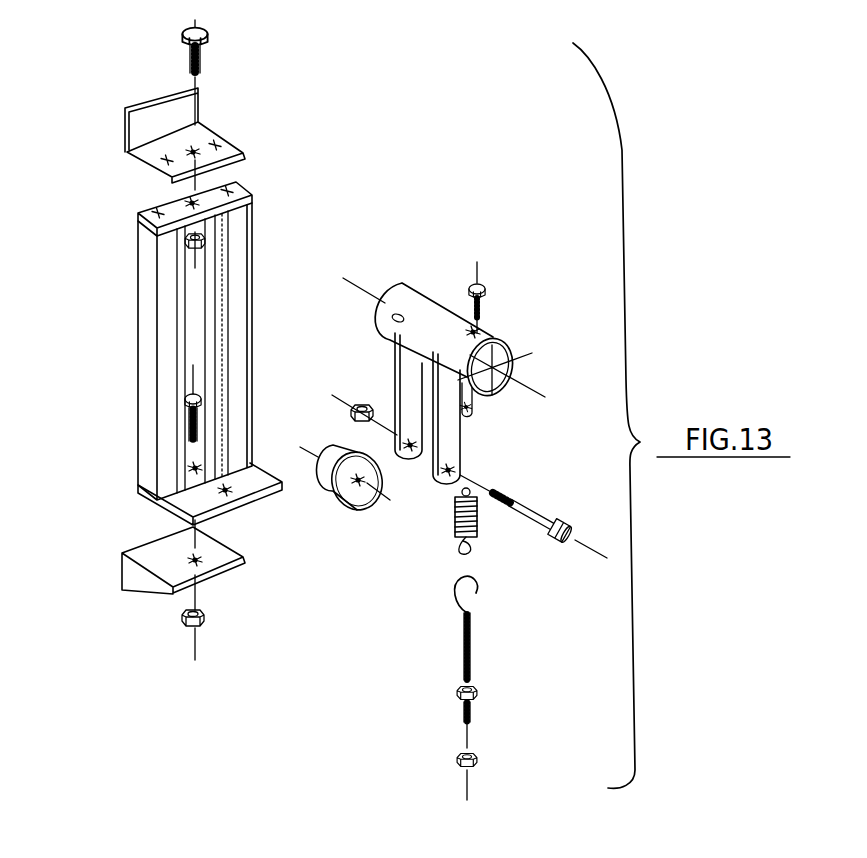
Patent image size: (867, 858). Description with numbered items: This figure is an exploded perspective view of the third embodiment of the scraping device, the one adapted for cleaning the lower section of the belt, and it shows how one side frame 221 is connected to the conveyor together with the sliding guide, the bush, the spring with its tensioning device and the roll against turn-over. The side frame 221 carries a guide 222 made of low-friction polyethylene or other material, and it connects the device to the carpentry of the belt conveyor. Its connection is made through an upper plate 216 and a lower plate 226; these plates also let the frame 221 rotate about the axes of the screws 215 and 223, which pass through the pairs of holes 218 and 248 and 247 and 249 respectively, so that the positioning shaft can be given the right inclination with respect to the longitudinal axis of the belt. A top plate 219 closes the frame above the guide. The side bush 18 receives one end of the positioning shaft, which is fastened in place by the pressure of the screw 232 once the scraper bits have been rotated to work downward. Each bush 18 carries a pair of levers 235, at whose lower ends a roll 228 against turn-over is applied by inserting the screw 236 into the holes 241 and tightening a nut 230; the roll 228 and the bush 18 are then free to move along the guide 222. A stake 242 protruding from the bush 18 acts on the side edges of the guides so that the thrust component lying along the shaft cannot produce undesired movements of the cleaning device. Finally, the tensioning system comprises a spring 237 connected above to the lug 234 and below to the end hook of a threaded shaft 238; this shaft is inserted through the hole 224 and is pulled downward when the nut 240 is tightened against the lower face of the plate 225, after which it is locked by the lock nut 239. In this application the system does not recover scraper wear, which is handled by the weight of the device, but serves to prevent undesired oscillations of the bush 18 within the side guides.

The side bush 18 is at (438, 318).
The screw 215 is at (200, 52).
The upper plate 216 is at (206, 132).
The hole 218 is at (195, 152).
The top plate 219 is at (243, 193).
The side frame 221 is at (238, 312).
The guide 222 is at (213, 278).
The screw 223 is at (186, 402).
The hole 224 is at (227, 492).
The plate 225 is at (263, 483).
The lower plate 226 is at (217, 553).
The roll against turn-over 228 is at (333, 458).
The nut 230 is at (362, 405).
The screw 232 is at (483, 290).
The lug 234 is at (475, 413).
The levers 235 is at (407, 415).
The screw 236 is at (530, 515).
The spring 237 is at (477, 533).
The threaded shaft 238 is at (470, 645).
The lock nut 239 is at (478, 693).
The nut 240 is at (478, 760).
The holes 241 is at (412, 440).
The stake 242 is at (398, 313).
The hole 247 is at (197, 562).
The hole 248 is at (190, 202).
The hole 249 is at (192, 468).